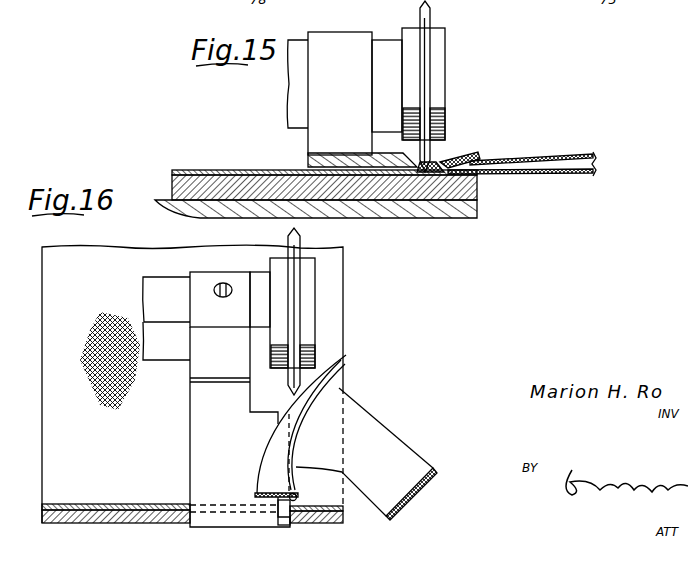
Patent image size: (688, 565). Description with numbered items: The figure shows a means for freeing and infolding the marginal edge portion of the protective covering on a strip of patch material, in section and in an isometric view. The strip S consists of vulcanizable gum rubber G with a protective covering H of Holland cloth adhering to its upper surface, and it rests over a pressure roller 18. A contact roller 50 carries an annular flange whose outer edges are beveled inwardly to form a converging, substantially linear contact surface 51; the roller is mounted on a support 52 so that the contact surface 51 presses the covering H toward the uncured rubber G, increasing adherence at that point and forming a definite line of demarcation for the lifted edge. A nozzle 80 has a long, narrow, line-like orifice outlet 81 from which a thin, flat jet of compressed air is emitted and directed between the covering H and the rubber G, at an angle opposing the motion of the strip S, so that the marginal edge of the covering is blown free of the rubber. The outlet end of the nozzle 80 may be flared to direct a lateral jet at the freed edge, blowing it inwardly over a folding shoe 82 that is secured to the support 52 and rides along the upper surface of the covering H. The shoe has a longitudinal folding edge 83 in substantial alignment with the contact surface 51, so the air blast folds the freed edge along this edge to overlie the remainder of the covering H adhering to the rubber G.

In FIG. 15, the contact roller 50 is at (440, 80).
In FIG. 16, the contact roller 50 is at (308, 336).
In FIG. 15, the contact surface 51 is at (430, 58).
In FIG. 16, the contact surface 51 is at (300, 310).
In FIG. 15, the support 52 is at (288, 102).
In FIG. 16, the support 52 is at (143, 297).
In FIG. 15, the nozzle 80 is at (556, 158).
In FIG. 16, the nozzle 80 is at (372, 437).
In FIG. 15, the orifice outlet 81 is at (465, 158).
In FIG. 15, the folding shoe 82 is at (357, 152).
In FIG. 16, the folding shoe 82 is at (218, 445).
In FIG. 15, the longitudinal folding edge 83 is at (430, 165).
In FIG. 16, the longitudinal folding edge 83 is at (285, 525).
In FIG. 15, the pressure roller 18 is at (448, 215).
In FIG. 15, the strip S is at (200, 172).
In FIG. 16, the strip S is at (125, 252).
In FIG. 15, the protective covering H is at (252, 170).
In FIG. 16, the protective covering H is at (60, 504).
In FIG. 15, the gum rubber G is at (172, 184).
In FIG. 16, the gum rubber G is at (42, 518).